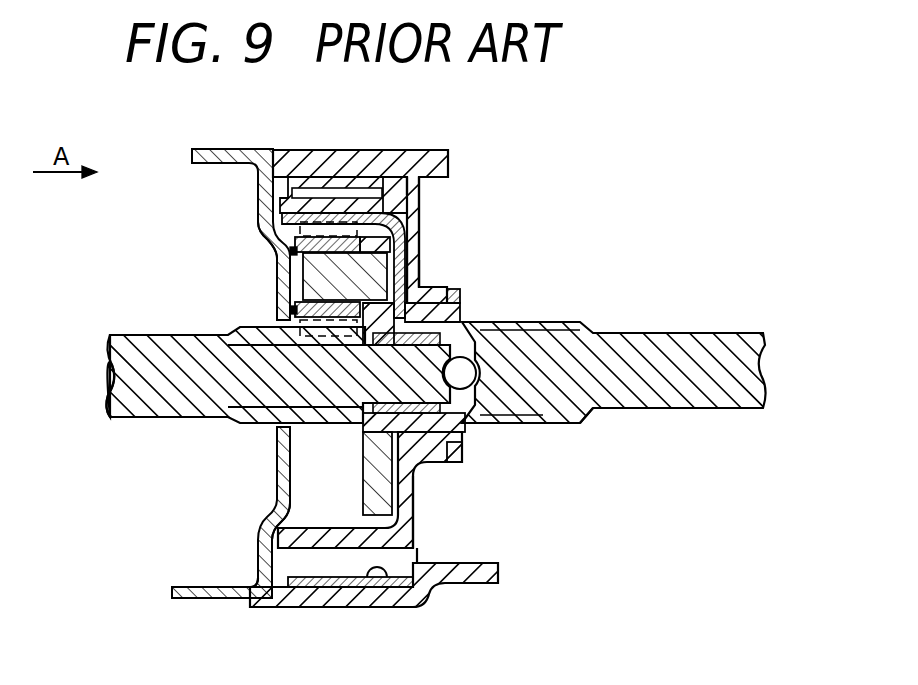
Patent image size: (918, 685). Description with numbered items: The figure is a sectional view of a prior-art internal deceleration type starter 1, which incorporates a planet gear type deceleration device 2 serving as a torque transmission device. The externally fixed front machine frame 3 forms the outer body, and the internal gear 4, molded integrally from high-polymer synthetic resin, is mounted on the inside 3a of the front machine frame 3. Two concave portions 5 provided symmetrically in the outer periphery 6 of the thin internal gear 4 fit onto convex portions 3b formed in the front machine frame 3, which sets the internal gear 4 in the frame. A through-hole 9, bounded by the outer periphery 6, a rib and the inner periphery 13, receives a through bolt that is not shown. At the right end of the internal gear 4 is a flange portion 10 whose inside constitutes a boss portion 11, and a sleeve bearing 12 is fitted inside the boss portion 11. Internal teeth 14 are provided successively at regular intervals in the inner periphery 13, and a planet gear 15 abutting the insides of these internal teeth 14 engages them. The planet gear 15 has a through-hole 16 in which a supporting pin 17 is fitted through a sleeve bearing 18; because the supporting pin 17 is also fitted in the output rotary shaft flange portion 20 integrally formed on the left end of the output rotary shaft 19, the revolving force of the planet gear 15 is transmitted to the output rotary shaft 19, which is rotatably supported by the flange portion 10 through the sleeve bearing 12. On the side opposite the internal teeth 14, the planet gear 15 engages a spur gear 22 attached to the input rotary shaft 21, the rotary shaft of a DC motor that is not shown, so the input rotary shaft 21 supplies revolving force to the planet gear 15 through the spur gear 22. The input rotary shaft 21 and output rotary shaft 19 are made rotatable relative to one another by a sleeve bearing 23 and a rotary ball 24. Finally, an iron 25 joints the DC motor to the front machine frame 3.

The internal deceleration type starter 1 is at (433, 149).
The planet gear type deceleration device 2 is at (420, 203).
The front machine frame 3 is at (373, 149).
The inside of the front machine frame 3a is at (412, 180).
The convex portions 3b is at (278, 584).
The internal gear 4 is at (421, 260).
The concave portions 5 is at (420, 610).
The outer periphery 6 is at (303, 160).
The through-hole 9 is at (370, 568).
The flange portion 10 is at (418, 276).
The boss portion 11 is at (462, 294).
The sleeve bearing 12 is at (459, 313).
The inner periphery 13 is at (262, 200).
The internal teeth 14 is at (275, 216).
The planet gear 15 is at (312, 276).
The through-hole 16 is at (313, 293).
The supporting pin 17 is at (300, 283).
The sleeve bearing 18 is at (288, 250).
The output rotary shaft 19 is at (708, 309).
The output rotary shaft flange portion 20 is at (403, 240).
The input rotary shaft 21 is at (138, 394).
The spur gear 22 is at (248, 336).
The sleeve bearing 23 is at (447, 340).
The rotary ball 24 is at (550, 424).
The iron 25 is at (214, 148).